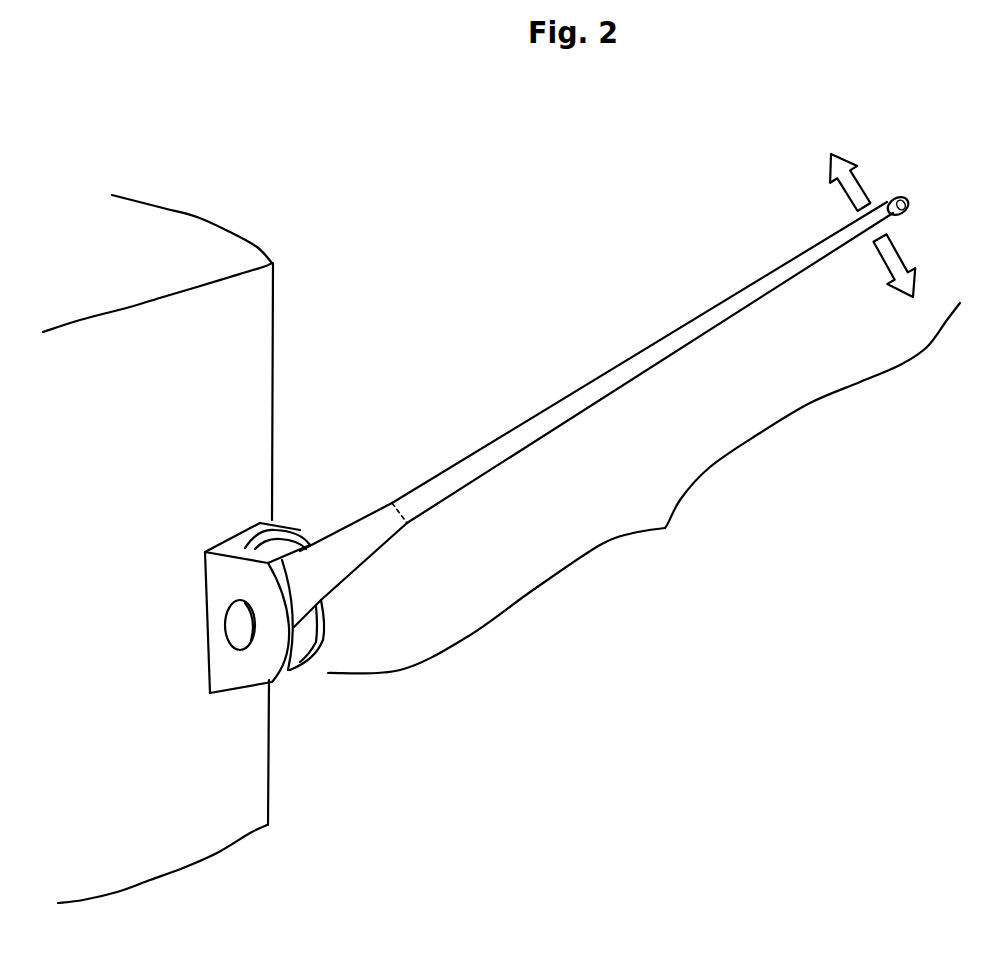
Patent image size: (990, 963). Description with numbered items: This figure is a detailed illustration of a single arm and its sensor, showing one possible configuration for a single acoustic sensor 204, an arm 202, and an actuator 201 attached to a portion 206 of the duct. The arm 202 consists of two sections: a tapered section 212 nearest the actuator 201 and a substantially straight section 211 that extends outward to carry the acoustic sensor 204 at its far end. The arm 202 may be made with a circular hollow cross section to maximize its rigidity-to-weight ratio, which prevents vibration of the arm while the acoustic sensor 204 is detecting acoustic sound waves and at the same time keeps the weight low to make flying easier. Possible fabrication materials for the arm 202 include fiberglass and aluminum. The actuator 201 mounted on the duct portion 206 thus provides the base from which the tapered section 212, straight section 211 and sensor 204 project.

The actuator 201 is at (245, 674).
The arm 202 is at (644, 488).
The acoustic sensor 204 is at (897, 197).
The portion of the duct 206 is at (243, 367).
The substantially straight section 211 is at (549, 427).
The tapered section 212 is at (338, 563).